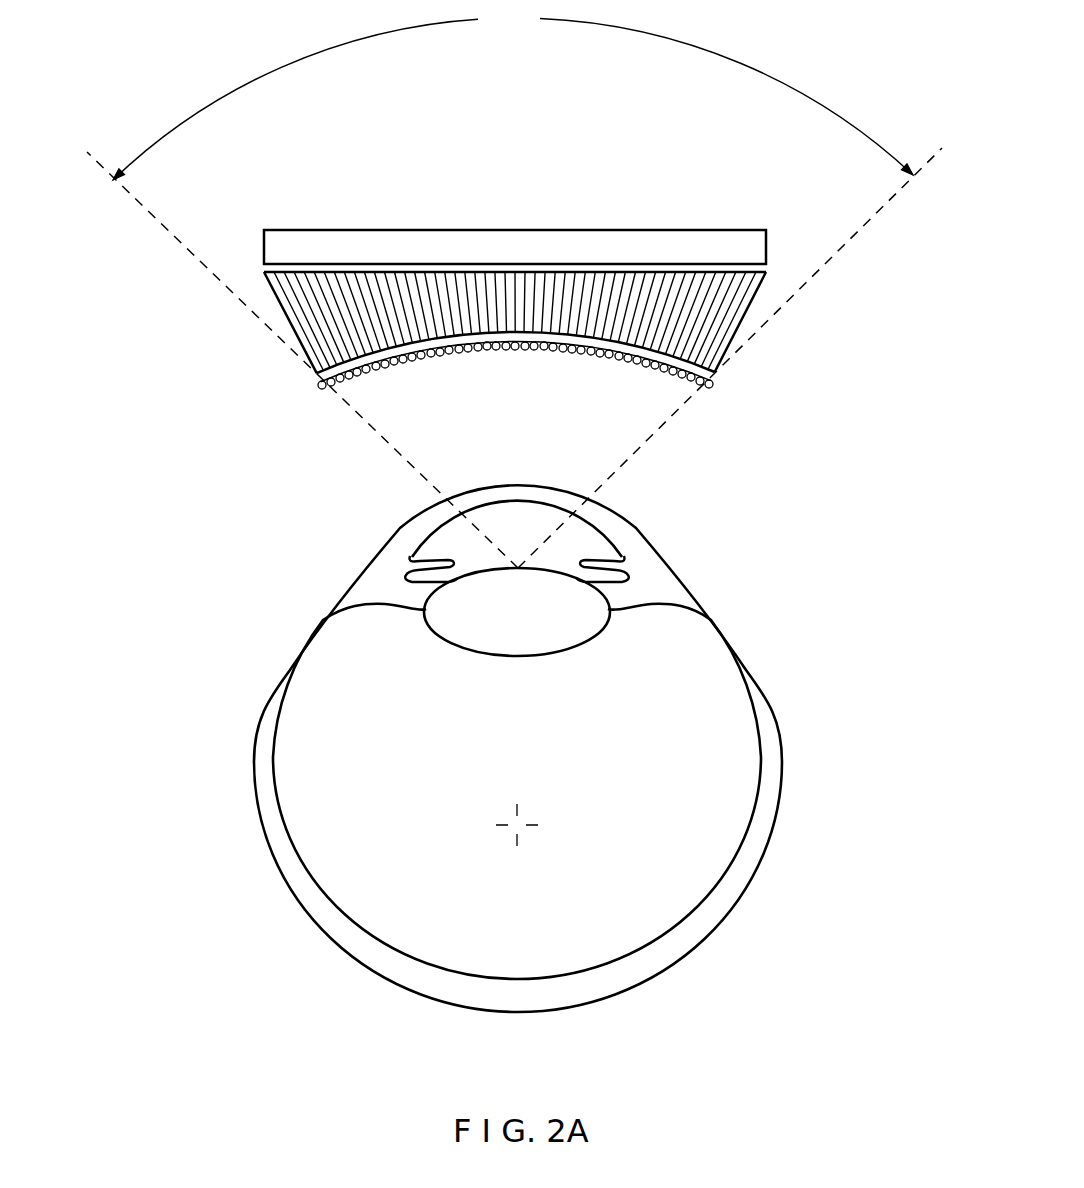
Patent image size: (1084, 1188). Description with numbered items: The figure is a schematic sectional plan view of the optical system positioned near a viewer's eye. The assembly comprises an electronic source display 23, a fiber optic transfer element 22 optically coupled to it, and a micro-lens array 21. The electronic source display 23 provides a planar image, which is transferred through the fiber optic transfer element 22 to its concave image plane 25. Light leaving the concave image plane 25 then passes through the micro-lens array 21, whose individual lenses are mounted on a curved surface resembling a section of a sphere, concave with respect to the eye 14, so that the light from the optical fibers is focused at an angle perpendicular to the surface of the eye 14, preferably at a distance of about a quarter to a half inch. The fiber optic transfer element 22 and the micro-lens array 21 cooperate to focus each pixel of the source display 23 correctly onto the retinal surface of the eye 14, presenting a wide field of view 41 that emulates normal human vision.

The viewing eye 14 is at (687, 572).
The micro-lens array 21 is at (657, 372).
The fiber optic transfer element 22 is at (735, 300).
The electronic source display 23 is at (663, 240).
The concave image plane 25 is at (712, 376).
The field of view 41 is at (514, 288).